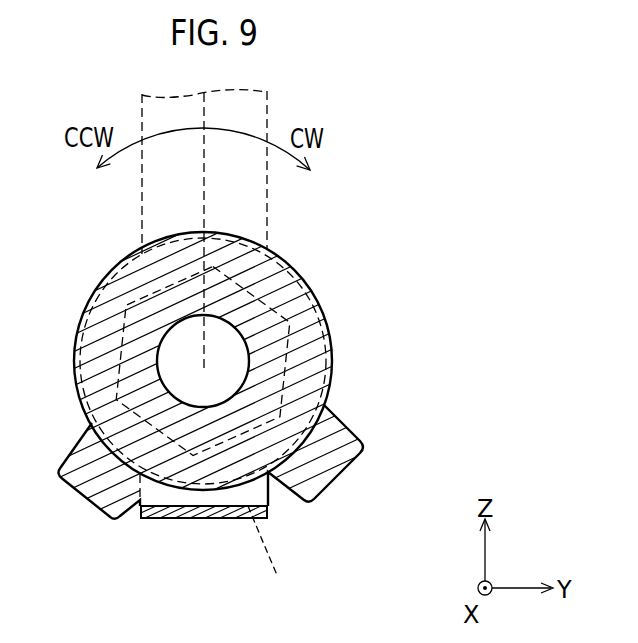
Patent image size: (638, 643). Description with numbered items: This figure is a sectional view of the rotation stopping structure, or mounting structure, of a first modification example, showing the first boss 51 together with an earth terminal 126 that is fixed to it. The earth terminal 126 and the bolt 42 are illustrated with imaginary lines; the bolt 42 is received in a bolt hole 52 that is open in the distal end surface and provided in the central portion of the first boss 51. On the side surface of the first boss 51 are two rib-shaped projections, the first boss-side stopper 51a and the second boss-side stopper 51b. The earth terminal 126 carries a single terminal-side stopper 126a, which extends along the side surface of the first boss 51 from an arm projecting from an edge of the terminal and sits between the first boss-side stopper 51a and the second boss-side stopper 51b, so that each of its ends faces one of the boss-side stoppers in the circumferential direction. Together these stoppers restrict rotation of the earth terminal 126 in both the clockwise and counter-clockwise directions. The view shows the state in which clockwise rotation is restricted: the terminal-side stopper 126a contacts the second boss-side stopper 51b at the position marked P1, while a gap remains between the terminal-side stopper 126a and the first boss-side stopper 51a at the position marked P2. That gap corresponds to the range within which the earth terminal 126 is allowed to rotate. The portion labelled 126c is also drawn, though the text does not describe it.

The bolt 42 is at (296, 320).
The first boss 51 is at (332, 333).
The bolt hole 52 is at (227, 326).
The first boss-side stopper 51a is at (337, 472).
The second boss-side stopper 51b is at (97, 504).
The earth terminal 126 is at (118, 262).
The terminal-side stopper 126a is at (175, 515).
The engaging portion 126c is at (282, 555).
The contact position P1 is at (131, 524).
The gap position P2 is at (292, 512).